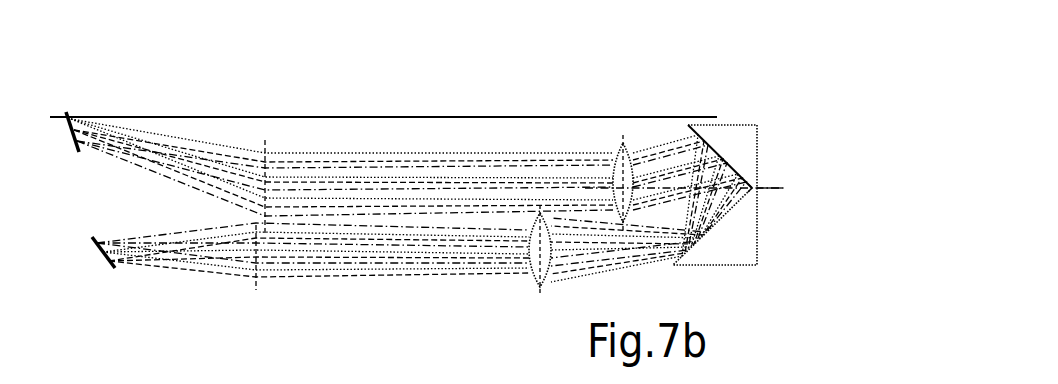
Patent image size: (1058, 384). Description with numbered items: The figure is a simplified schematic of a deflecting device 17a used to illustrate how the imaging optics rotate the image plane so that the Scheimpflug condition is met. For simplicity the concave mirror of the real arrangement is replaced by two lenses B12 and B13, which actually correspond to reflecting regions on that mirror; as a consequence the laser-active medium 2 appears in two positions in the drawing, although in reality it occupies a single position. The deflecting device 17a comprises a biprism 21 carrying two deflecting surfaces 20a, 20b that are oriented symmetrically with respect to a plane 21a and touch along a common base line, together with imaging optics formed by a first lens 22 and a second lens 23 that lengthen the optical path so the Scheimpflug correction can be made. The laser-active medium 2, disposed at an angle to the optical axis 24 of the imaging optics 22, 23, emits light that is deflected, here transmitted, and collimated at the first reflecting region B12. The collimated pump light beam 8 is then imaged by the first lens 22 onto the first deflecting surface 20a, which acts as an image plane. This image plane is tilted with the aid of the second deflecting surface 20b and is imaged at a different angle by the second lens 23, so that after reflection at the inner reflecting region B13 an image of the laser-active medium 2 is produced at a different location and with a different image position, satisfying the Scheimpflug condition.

The deflecting device 17a is at (152, 75).
The laser-active medium 2 is at (66, 134).
The pump light beam 8 is at (320, 277).
The optical axis 24 is at (345, 116).
The reflecting region of the concave mirror B13 is at (258, 145).
The reflecting region of the concave mirror B12 is at (256, 285).
The second lens 23 is at (618, 143).
The first lens 22 is at (528, 284).
The biprism 21 is at (733, 135).
The second deflecting surface 20b is at (688, 125).
The first deflecting surface 20a is at (700, 222).
The plane of symmetry 21a is at (772, 194).